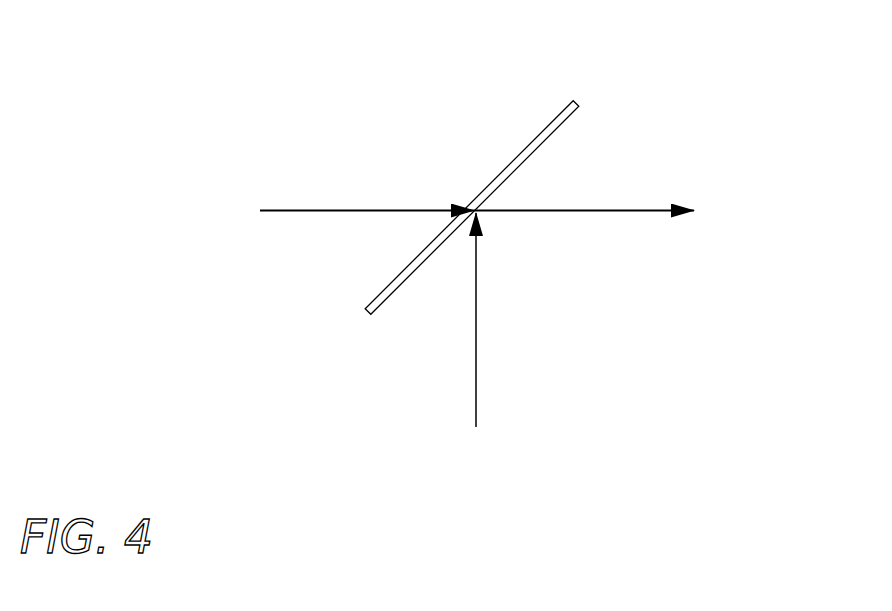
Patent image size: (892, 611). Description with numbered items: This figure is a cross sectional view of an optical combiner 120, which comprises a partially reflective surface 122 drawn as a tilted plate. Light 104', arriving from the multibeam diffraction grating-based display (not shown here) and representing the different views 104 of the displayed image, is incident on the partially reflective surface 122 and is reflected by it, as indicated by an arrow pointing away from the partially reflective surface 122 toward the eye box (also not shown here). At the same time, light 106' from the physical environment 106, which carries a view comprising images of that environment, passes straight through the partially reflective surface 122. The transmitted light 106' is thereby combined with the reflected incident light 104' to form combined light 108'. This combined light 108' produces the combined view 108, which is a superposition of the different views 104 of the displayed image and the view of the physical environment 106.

The optical combiner 120 is at (327, 63).
The partially reflective surface 122 is at (542, 152).
The physical environment 106 is at (332, 215).
The light from the physical environment 106' is at (315, 175).
The combined view 108 is at (618, 213).
The combined light 108' is at (637, 250).
The different views of the displayed image 104 is at (477, 340).
The light incident on the partially reflective surface 104' is at (531, 370).